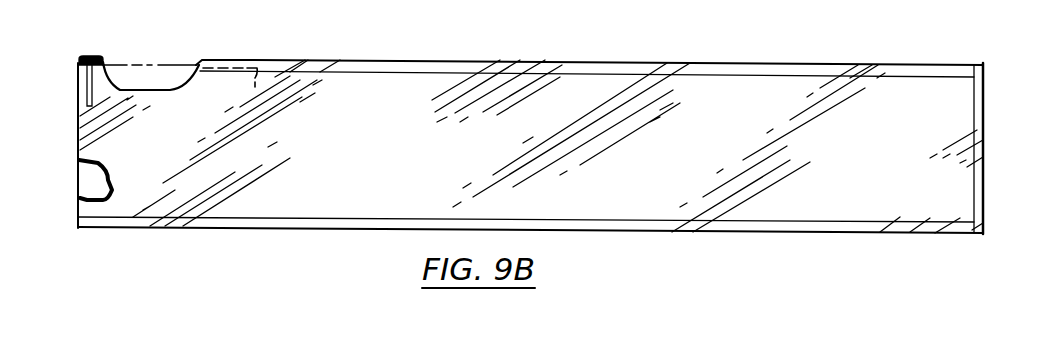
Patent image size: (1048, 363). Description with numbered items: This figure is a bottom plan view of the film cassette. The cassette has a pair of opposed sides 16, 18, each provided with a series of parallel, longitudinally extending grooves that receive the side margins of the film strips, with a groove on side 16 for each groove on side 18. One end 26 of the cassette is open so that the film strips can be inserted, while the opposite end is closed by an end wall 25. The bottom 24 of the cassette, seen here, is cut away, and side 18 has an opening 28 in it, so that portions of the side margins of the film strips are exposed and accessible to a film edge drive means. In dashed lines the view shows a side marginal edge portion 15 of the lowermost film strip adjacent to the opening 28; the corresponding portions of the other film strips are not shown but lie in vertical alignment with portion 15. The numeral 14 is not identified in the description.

The hidden channel line 14 is at (148, 58).
The side marginal edge portion 15 is at (120, 75).
The side 16 is at (664, 229).
The side 18 is at (432, 62).
The bottom 24 is at (530, 146).
The end wall 25 is at (980, 127).
The end 26 is at (92, 180).
The opening 28 is at (196, 64).